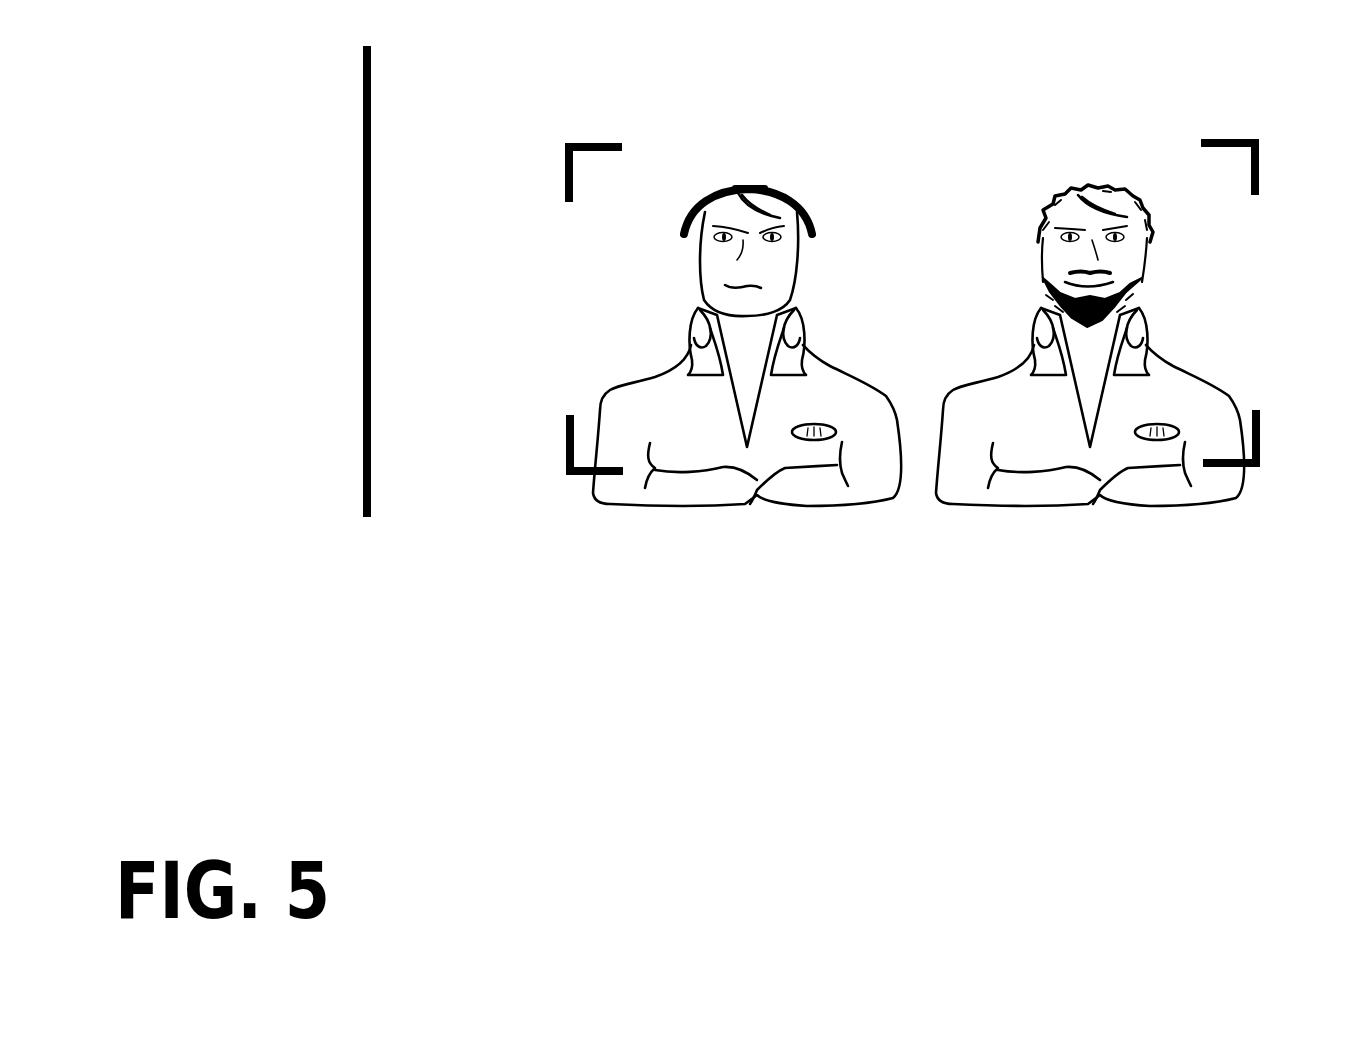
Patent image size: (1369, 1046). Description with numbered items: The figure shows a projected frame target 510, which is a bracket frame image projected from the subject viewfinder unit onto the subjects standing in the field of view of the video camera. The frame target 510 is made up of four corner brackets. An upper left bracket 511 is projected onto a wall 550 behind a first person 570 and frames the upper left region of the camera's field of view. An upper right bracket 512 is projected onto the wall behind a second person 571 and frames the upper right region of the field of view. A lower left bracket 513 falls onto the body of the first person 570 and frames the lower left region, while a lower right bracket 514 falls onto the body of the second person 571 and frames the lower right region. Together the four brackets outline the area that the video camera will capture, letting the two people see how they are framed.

The frame target 510 is at (557, 160).
The upper left bracket 511 is at (598, 143).
The upper right bracket 512 is at (1260, 168).
The lower left bracket 513 is at (600, 475).
The lower right bracket 514 is at (1262, 455).
The wall 550 is at (390, 362).
The first person 570 is at (810, 249).
The second person 571 is at (1027, 221).